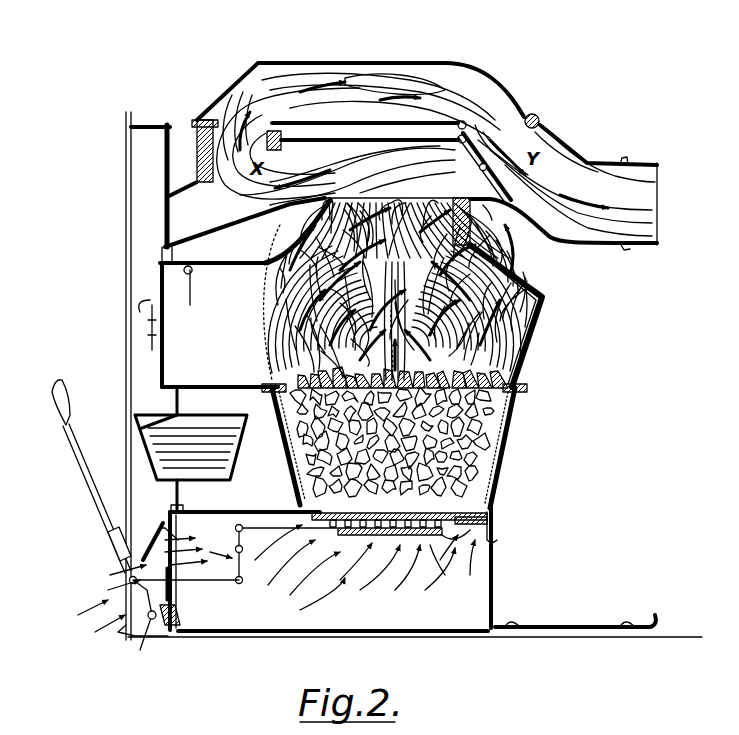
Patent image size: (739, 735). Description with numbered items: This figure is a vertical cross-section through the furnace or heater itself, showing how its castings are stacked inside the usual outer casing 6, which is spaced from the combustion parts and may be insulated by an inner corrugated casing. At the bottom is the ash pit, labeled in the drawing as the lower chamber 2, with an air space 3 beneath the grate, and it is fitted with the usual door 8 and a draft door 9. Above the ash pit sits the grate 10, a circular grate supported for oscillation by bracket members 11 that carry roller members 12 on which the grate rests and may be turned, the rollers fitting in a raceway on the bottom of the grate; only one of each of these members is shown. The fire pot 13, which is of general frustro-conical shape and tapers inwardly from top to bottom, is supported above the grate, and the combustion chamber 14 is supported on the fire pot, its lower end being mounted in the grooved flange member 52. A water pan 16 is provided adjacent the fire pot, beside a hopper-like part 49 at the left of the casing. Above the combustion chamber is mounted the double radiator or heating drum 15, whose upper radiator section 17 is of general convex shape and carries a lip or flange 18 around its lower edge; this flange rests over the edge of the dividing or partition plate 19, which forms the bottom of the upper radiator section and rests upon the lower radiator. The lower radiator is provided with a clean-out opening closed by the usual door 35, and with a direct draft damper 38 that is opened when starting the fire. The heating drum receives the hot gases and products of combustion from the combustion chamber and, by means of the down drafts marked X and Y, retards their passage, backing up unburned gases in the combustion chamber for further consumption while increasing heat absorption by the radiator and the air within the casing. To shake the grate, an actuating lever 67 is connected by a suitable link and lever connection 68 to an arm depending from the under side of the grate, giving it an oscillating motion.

The ash pit 2 is at (415, 568).
The air passage 3 is at (438, 556).
The outer casing 6 is at (141, 231).
The door 8 is at (171, 630).
The draft door 9 is at (157, 537).
The grate 10 is at (465, 527).
The bracket members 11 is at (490, 200).
The roller members 12 is at (488, 519).
The fire pot 13 is at (504, 418).
The combustion chamber 14 is at (541, 313).
The double radiator or heating drum 15 is at (345, 74).
The water pan 16 is at (172, 432).
The upper radiator section 17 is at (398, 62).
The lip or flange 18 is at (540, 121).
The dividing or partition plate 19 is at (440, 118).
The door 35 is at (166, 219).
The damper 38 is at (476, 158).
The hopper chute 49 is at (155, 318).
The grooved flange member 52 is at (493, 504).
The actuating lever 67 is at (92, 493).
The link and lever connection 68 is at (207, 577).